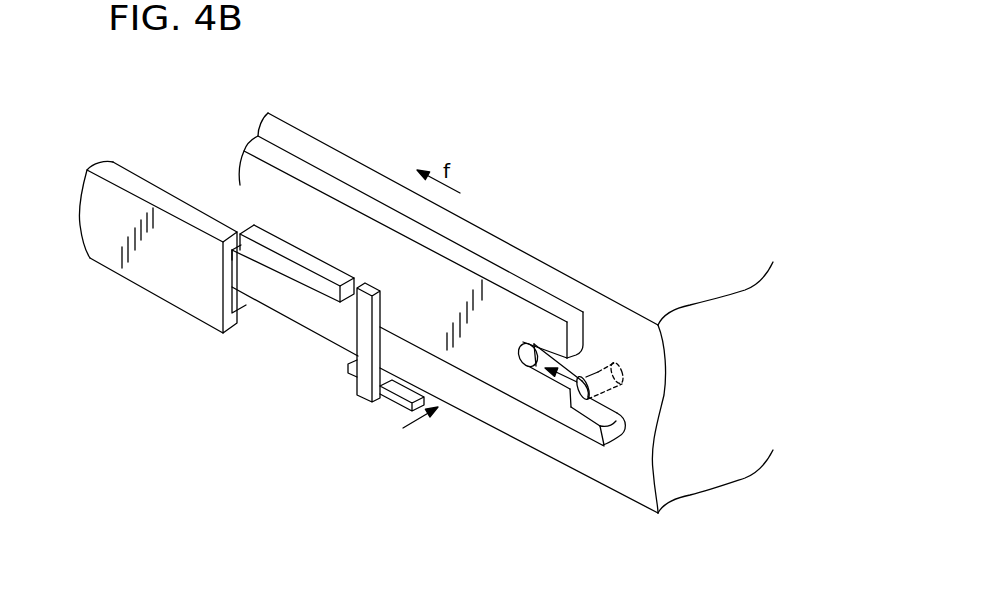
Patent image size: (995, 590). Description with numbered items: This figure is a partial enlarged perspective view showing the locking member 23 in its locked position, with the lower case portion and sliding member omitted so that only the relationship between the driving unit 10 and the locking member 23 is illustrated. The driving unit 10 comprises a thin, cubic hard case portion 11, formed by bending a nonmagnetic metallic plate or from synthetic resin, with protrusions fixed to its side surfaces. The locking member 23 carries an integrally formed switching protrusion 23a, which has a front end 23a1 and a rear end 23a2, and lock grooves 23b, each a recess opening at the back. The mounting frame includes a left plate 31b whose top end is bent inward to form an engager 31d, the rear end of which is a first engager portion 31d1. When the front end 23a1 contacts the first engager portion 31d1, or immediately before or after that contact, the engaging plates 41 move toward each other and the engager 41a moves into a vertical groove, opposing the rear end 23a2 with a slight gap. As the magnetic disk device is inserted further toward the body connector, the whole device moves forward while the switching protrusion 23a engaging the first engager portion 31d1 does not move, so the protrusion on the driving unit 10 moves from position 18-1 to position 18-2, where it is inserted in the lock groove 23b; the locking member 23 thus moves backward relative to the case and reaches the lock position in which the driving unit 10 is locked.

The driving unit 10 is at (621, 475).
The hard case portion 11 is at (625, 332).
The position of protrusion 18-1 is at (625, 402).
The position of protrusion 18-2 is at (522, 347).
The locking member 23 is at (514, 283).
The switching protrusion 23a is at (308, 264).
The front end 23a1 is at (234, 284).
The rear end 23a2 is at (353, 302).
The lock groove 23b is at (572, 374).
The left plate 31b is at (99, 241).
The engager 31d is at (120, 172).
The first engager portion 31d1 is at (236, 233).
The engaging plate 41 is at (405, 394).
The engager 41a is at (360, 397).